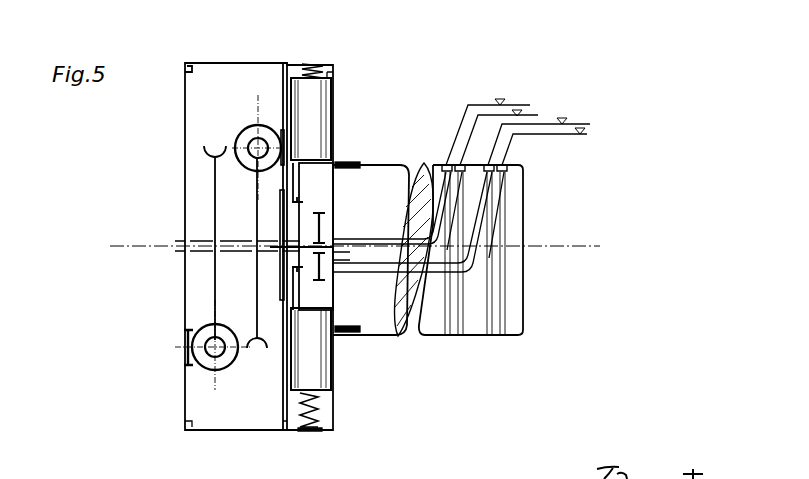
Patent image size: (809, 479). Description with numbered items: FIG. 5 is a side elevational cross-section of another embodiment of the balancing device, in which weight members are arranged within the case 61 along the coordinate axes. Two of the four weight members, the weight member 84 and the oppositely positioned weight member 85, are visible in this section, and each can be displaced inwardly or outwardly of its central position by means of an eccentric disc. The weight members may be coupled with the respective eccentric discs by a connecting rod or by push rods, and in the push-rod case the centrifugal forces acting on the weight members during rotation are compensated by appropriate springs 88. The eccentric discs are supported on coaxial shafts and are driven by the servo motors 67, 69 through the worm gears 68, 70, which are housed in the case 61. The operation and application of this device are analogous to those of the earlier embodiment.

The case 61 is at (223, 62).
The servo motor 67 is at (252, 143).
The worm gear 68 is at (255, 290).
The servo motor 69 is at (208, 363).
The worm gear 70 is at (215, 193).
The weight member 84 is at (313, 105).
The weight member 85 is at (313, 372).
The spring 88 is at (313, 410).